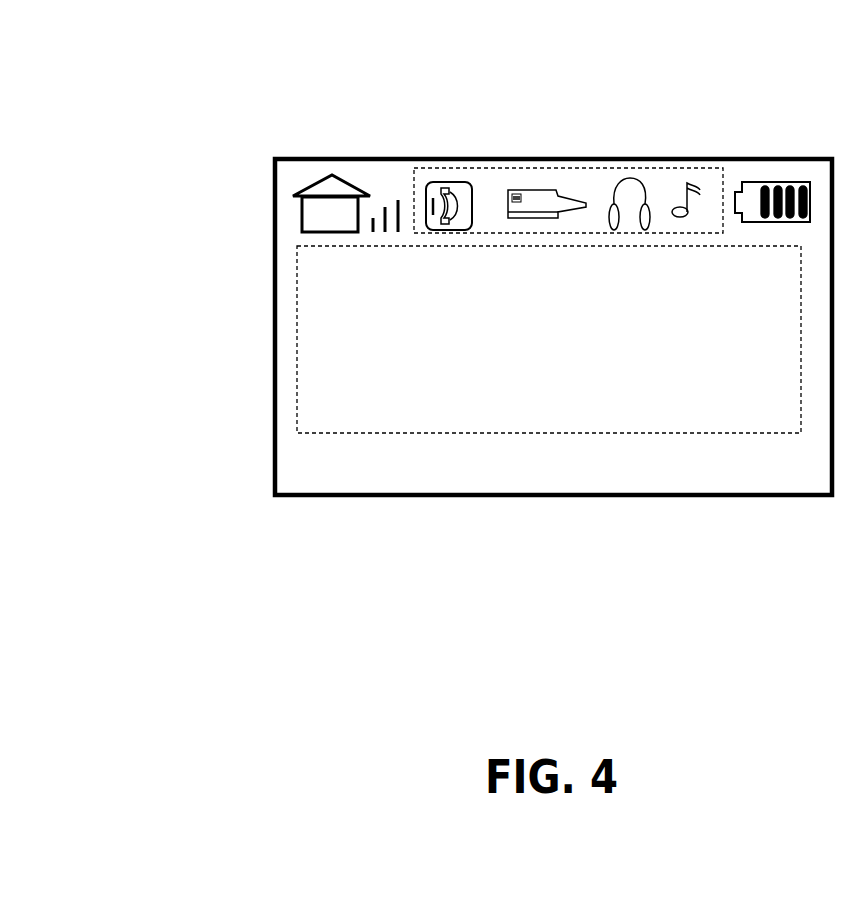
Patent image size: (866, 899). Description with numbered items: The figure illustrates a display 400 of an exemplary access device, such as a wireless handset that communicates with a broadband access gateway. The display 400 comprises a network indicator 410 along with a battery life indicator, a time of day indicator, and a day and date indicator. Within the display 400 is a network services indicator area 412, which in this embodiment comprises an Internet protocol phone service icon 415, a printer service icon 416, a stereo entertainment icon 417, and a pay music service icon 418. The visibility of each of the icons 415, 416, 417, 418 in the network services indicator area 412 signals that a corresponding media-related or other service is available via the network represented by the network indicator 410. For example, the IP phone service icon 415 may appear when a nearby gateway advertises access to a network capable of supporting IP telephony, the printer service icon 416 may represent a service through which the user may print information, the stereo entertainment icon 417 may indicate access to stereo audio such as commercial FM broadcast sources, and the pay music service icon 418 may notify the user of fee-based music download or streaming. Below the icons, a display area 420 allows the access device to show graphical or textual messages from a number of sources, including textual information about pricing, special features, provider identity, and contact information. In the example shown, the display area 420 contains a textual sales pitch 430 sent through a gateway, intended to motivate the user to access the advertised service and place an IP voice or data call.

The display 400 is at (277, 497).
The network indicator 410 is at (305, 193).
The network services indicator area 412 is at (413, 184).
The Internet protocol (IP) phone service icon 415 is at (452, 182).
The printer service icon 416 is at (537, 190).
The stereo entertainment icon 417 is at (634, 178).
The pay music service icon 418 is at (706, 182).
The display area 420 is at (551, 434).
The textual sales pitch 430 is at (346, 310).